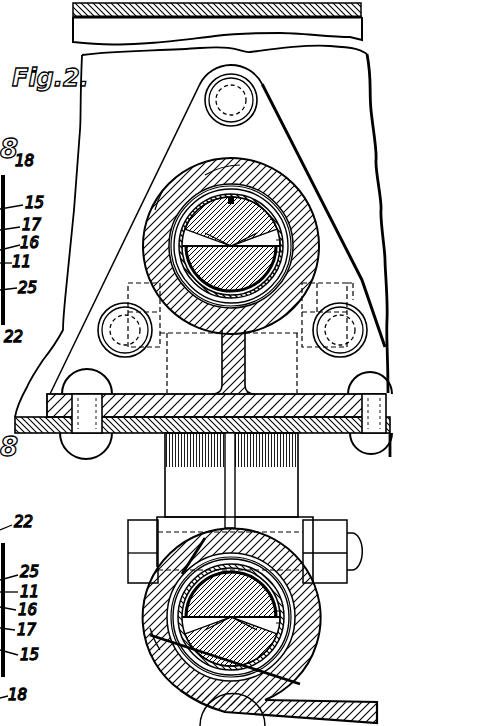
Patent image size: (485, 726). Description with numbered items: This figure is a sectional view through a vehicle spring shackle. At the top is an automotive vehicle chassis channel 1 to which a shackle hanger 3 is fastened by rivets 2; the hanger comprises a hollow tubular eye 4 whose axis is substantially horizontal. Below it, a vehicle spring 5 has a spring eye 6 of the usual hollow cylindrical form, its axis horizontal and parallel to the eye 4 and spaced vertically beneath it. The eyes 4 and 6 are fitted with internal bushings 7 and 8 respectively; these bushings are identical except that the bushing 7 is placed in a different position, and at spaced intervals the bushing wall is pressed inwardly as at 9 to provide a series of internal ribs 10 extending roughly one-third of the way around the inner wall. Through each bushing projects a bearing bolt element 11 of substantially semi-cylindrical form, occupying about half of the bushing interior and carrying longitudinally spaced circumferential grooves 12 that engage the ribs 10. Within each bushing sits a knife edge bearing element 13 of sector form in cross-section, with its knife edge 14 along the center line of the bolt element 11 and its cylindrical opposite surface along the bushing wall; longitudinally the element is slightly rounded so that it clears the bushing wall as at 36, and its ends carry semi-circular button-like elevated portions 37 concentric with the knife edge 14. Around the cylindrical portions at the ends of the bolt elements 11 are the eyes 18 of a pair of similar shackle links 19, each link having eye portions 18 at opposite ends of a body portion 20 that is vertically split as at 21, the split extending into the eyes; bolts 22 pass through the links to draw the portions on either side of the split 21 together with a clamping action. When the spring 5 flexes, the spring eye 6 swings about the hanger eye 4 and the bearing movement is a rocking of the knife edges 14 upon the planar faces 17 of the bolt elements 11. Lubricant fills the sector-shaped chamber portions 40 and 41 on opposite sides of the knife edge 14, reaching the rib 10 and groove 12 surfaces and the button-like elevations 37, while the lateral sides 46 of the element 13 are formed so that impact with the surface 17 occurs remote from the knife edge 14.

The automotive vehicle chassis channel 1 is at (75, 25).
The rivets 2 is at (248, 97).
The shackle hanger 3 is at (163, 150).
The hollow tubular eye 4 is at (290, 187).
The vehicle spring 5 is at (350, 700).
The spring eye 6 is at (170, 673).
The internal bushing 7 is at (231, 246).
The internal bushing 8 is at (300, 643).
The inwardly pressed wall portions 9 is at (262, 300).
The internal ribs 10 is at (218, 300).
The bearing bolt element 11 is at (170, 270).
The circumferential grooves 12 is at (170, 248).
The knife edge bearing element 13 is at (300, 202).
The knife edge 14 is at (260, 187).
The planar face 17 is at (290, 240).
The eye portion 18 is at (165, 196).
The shackle link 19 is at (170, 485).
The body portion 20 is at (290, 453).
The split 21 is at (225, 459).
The bolts 22 is at (153, 345).
The clearance 36 is at (212, 177).
The button-like elevated portions 37 is at (231, 431).
The sector-shaped chamber portion 40 is at (185, 235).
The sector-shaped chamber portion 41 is at (285, 230).
The lateral sides 46 is at (285, 218).